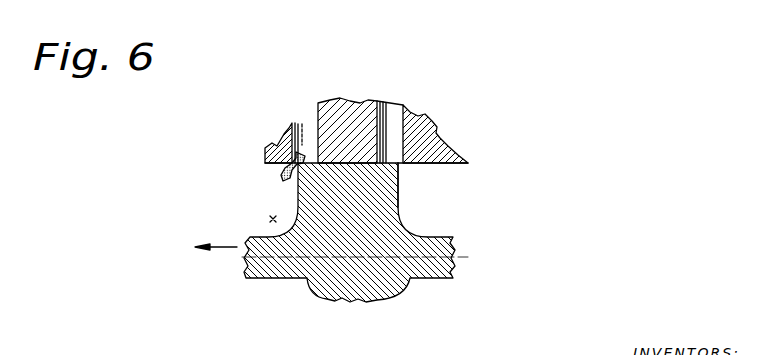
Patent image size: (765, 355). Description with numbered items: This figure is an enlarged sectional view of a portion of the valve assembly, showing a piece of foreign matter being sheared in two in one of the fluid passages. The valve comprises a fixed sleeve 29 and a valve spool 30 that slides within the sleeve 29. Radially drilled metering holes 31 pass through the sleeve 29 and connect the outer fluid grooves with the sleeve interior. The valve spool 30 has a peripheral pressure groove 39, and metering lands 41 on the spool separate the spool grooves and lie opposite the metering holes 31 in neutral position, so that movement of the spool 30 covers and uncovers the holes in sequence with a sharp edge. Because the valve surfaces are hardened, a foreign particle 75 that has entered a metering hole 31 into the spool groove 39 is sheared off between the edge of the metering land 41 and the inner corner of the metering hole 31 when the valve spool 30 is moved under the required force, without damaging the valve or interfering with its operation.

The sleeve 29 is at (448, 129).
The valve spool 30 is at (413, 263).
The metering hole 31 is at (312, 122).
The pressure groove 39 is at (268, 220).
The metering land 41 is at (353, 217).
The foreign particle 75 is at (277, 175).